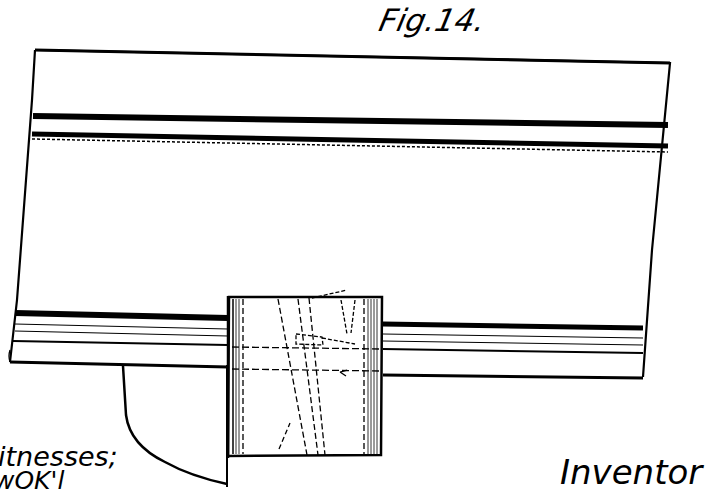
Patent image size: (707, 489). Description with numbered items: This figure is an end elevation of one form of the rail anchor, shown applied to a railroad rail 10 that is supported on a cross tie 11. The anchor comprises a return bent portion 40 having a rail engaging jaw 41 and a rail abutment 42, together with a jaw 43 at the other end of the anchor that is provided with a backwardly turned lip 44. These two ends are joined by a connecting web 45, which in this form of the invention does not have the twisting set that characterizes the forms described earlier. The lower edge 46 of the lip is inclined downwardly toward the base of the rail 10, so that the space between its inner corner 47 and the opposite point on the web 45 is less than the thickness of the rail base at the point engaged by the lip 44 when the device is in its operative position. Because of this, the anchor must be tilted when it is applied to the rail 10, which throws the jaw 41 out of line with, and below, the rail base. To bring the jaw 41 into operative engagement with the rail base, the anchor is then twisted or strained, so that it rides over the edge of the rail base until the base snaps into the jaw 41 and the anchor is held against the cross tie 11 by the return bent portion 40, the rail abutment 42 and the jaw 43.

The railroad rail 10 is at (224, 64).
The cross tie 11 is at (147, 395).
The return bent portion 40 is at (329, 433).
The rail engaging jaw 41 is at (230, 297).
The rail abutment 42 is at (383, 323).
The jaw 43 is at (292, 310).
The backwardly turned lip 44 is at (327, 295).
The connecting web 45 is at (342, 373).
The lower edge 46 is at (305, 298).
The inner corner 47 is at (362, 302).